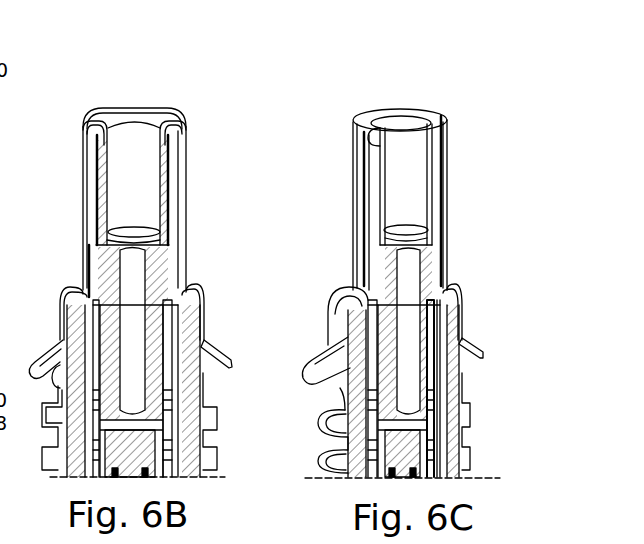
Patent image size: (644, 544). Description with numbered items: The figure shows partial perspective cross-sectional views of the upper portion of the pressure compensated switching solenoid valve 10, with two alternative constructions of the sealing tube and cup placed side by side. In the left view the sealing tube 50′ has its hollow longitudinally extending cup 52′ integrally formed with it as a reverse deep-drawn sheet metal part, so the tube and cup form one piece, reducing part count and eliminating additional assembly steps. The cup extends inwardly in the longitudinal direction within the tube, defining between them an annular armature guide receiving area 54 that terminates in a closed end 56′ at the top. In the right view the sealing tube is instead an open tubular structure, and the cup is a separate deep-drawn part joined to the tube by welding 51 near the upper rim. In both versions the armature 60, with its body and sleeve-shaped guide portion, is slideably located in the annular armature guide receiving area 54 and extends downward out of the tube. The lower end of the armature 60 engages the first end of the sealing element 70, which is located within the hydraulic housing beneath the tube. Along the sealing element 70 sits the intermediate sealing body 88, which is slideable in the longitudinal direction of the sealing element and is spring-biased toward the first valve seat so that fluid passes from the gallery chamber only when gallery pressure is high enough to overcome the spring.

In FIG. 6B, the pressure compensated switching solenoid valve 10 is at (226, 90).
In FIG. 6C, the pressure compensated switching solenoid valve 10 is at (470, 100).
In FIG. 6B, the sealing tube 50′ is at (187, 270).
In FIG. 6C, the welding 51 is at (358, 131).
In FIG. 6B, the hollow longitudinally extending cup 52′ is at (163, 154).
In FIG. 6B, the annular armature guide receiving area 54 is at (186, 211).
In FIG. 6C, the annular armature guide receiving area 54 is at (448, 194).
In FIG. 6B, the closed end 56′ is at (172, 107).
In FIG. 6B, the armature 60 is at (91, 284).
In FIG. 6C, the armature 60 is at (372, 280).
In FIG. 6B, the sealing element 70 is at (102, 398).
In FIG. 6C, the sealing element 70 is at (380, 356).
In FIG. 6B, the intermediate sealing body 88 is at (166, 462).
In FIG. 6C, the intermediate sealing body 88 is at (422, 438).